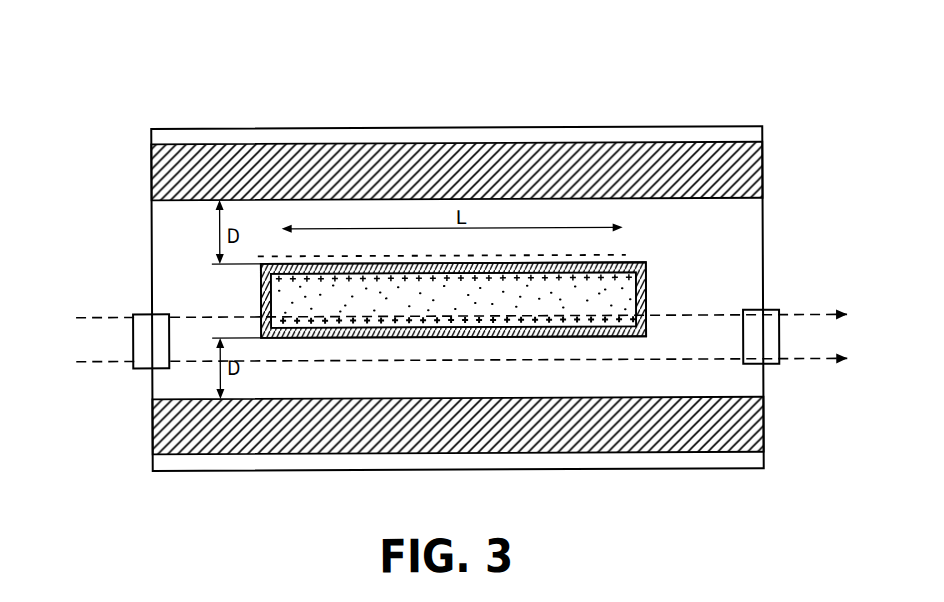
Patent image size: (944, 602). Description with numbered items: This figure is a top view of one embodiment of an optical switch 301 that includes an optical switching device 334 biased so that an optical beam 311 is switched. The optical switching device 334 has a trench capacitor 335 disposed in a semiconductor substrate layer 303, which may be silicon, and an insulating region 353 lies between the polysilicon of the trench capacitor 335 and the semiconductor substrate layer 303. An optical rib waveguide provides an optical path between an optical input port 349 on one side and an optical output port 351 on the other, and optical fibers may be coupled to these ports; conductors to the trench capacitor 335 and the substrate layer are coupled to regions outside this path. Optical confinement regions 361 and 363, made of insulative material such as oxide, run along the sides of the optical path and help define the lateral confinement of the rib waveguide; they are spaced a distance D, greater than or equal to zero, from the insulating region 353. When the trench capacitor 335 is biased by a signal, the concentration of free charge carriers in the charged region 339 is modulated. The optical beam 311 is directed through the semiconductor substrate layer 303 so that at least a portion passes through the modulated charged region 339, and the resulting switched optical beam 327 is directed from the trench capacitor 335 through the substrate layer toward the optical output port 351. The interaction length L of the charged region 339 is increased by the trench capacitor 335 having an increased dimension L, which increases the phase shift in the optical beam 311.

The optical switch 301 is at (670, 87).
The semiconductor substrate layer 303 is at (763, 228).
The optical beam 311 is at (64, 308).
The switched optical beam 327 is at (850, 303).
The optical switching device 334 is at (628, 236).
The trench capacitor 335 is at (647, 302).
The charged region 339 is at (259, 337).
The optical input port 349 is at (145, 313).
The optical output port 351 is at (762, 311).
The insulating region 353 is at (648, 268).
The optical confinement region 361 is at (763, 172).
The optical confinement region 363 is at (763, 425).